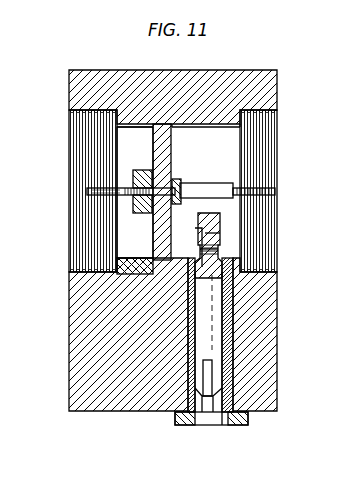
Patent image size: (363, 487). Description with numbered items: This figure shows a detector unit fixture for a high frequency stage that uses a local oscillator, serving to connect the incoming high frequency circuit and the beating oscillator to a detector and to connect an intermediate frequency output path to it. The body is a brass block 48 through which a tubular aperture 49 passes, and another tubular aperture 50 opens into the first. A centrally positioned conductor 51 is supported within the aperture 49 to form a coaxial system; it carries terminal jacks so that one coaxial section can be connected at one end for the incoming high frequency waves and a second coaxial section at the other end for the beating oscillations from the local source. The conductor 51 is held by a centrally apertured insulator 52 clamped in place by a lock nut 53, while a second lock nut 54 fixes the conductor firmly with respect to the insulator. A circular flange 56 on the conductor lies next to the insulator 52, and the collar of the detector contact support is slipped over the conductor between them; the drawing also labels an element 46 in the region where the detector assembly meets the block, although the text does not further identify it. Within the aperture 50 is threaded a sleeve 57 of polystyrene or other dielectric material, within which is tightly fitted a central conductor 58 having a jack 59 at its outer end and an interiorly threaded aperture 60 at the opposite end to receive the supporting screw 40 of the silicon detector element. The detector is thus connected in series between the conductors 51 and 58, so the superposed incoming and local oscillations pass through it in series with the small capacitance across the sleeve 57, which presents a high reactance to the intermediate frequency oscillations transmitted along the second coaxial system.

The supporting screw 40 is at (198, 222).
The upper housing block 46 is at (200, 213).
The brass block 48 is at (83, 325).
The tubular aperture 49 is at (135, 192).
The tubular aperture 50 is at (213, 318).
The centrally positioned conductor 51 is at (203, 185).
The centrally apertured insulator 52 is at (174, 137).
The lock nut 53 is at (122, 123).
The lock nut 54 is at (143, 214).
The circular flange 56 is at (178, 181).
The sleeve 57 is at (225, 410).
The central conductor 58 is at (218, 249).
The jack 59 is at (205, 410).
The interiorly threaded aperture 60 is at (220, 233).